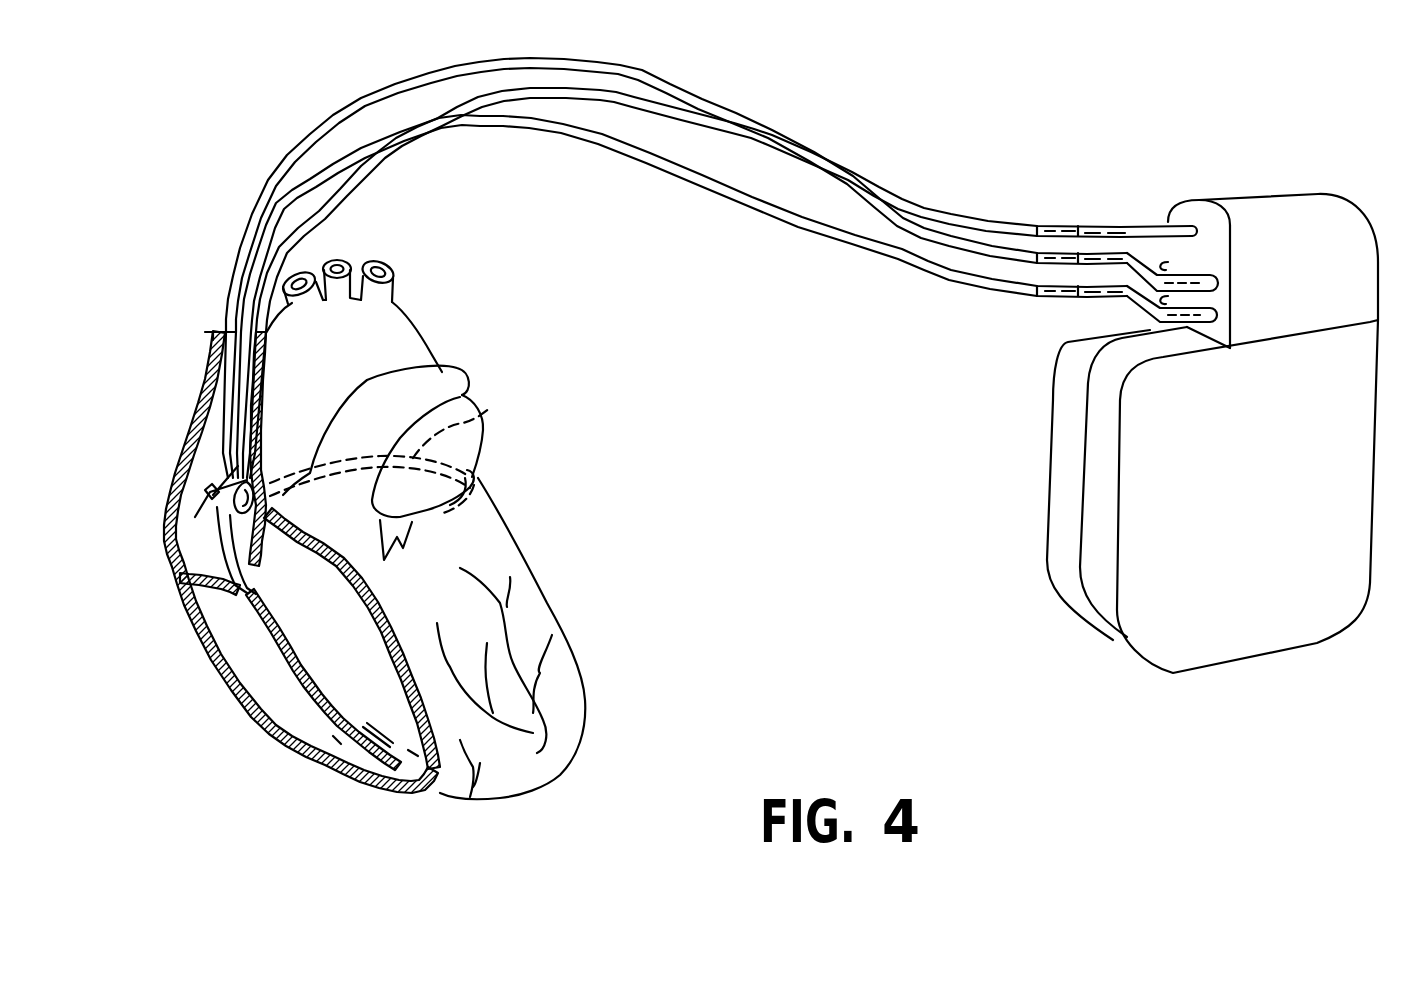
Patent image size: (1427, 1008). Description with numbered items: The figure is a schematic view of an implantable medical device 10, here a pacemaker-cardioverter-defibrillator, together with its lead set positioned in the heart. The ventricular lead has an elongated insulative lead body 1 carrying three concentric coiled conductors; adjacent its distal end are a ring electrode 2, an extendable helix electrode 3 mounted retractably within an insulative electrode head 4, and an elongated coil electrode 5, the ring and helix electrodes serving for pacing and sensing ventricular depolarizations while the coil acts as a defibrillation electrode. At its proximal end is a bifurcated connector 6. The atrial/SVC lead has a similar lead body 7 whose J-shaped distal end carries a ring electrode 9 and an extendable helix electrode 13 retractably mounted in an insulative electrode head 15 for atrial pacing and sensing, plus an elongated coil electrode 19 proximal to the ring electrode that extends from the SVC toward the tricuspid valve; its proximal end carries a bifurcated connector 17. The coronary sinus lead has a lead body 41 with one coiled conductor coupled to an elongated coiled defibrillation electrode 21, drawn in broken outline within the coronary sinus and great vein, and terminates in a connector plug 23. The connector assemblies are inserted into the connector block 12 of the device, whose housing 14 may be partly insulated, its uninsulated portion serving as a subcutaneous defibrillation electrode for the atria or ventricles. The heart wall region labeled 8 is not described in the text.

The lead body 1 is at (927, 268).
The lead body 41 is at (893, 202).
The lead body 7 is at (965, 245).
The connector plug 23 is at (1103, 228).
The bifurcated connector 17 is at (1143, 265).
The bifurcated connector 6 is at (1102, 291).
The connector block 12 is at (1285, 208).
The implantable medical device 10 is at (1237, 424).
The housing 14 is at (1140, 618).
The elongated coil electrode 19 is at (213, 368).
The insulative electrode head 15 is at (233, 463).
The ring electrode 9 is at (205, 493).
The extendable helix electrode 13 is at (240, 465).
The elongated coiled defibrillation electrode 21 is at (490, 408).
The elongated coil electrode 5 is at (305, 670).
The ring electrode 2 is at (337, 740).
The insulative electrode head 4 is at (363, 727).
The extendable helix electrode 3 is at (413, 753).
The heart 8 is at (510, 763).